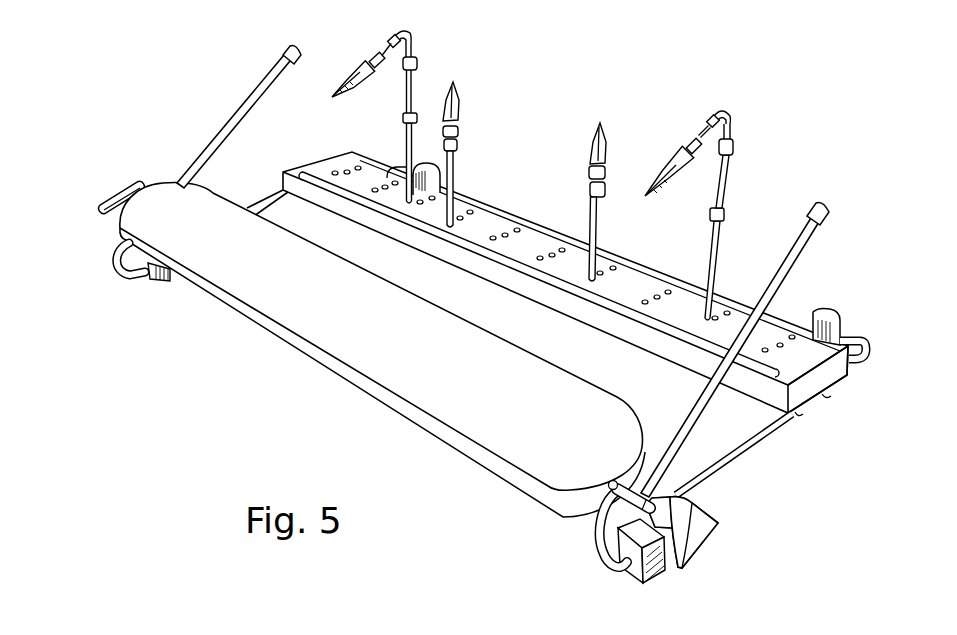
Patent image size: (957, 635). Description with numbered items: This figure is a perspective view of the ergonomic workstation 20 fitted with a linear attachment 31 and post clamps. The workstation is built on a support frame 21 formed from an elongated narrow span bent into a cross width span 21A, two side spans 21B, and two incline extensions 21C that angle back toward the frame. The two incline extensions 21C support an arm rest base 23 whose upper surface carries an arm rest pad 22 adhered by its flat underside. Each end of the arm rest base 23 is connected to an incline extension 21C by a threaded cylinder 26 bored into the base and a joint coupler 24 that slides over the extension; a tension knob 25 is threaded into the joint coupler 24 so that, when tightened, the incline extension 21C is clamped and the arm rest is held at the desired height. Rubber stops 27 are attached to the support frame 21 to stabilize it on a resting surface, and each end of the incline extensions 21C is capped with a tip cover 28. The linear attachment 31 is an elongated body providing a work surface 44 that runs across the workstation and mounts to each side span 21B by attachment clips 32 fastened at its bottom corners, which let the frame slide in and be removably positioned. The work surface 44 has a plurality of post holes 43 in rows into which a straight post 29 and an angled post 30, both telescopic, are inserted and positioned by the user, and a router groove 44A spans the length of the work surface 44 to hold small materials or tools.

The ergonomic workstation 20 is at (248, 353).
The support frame 21 is at (768, 438).
The cross width span 21A is at (503, 208).
The side span 21B is at (722, 462).
The incline extension 21C is at (238, 117).
The arm rest pad 22 is at (473, 402).
The arm rest base 23 is at (373, 392).
The joint coupler 24 is at (618, 498).
The tension knob 25 is at (120, 198).
The threaded cylinder 26 is at (610, 488).
The rubber stop 27 is at (152, 281).
The tip cover 28 is at (303, 51).
The straight post 29 is at (459, 174).
The angled post 30 is at (404, 138).
The linear attachment 31 is at (837, 375).
The attachment clip 32 is at (803, 409).
The post holes 43 is at (792, 338).
The work surface 44 is at (338, 163).
The router groove 44A is at (310, 176).